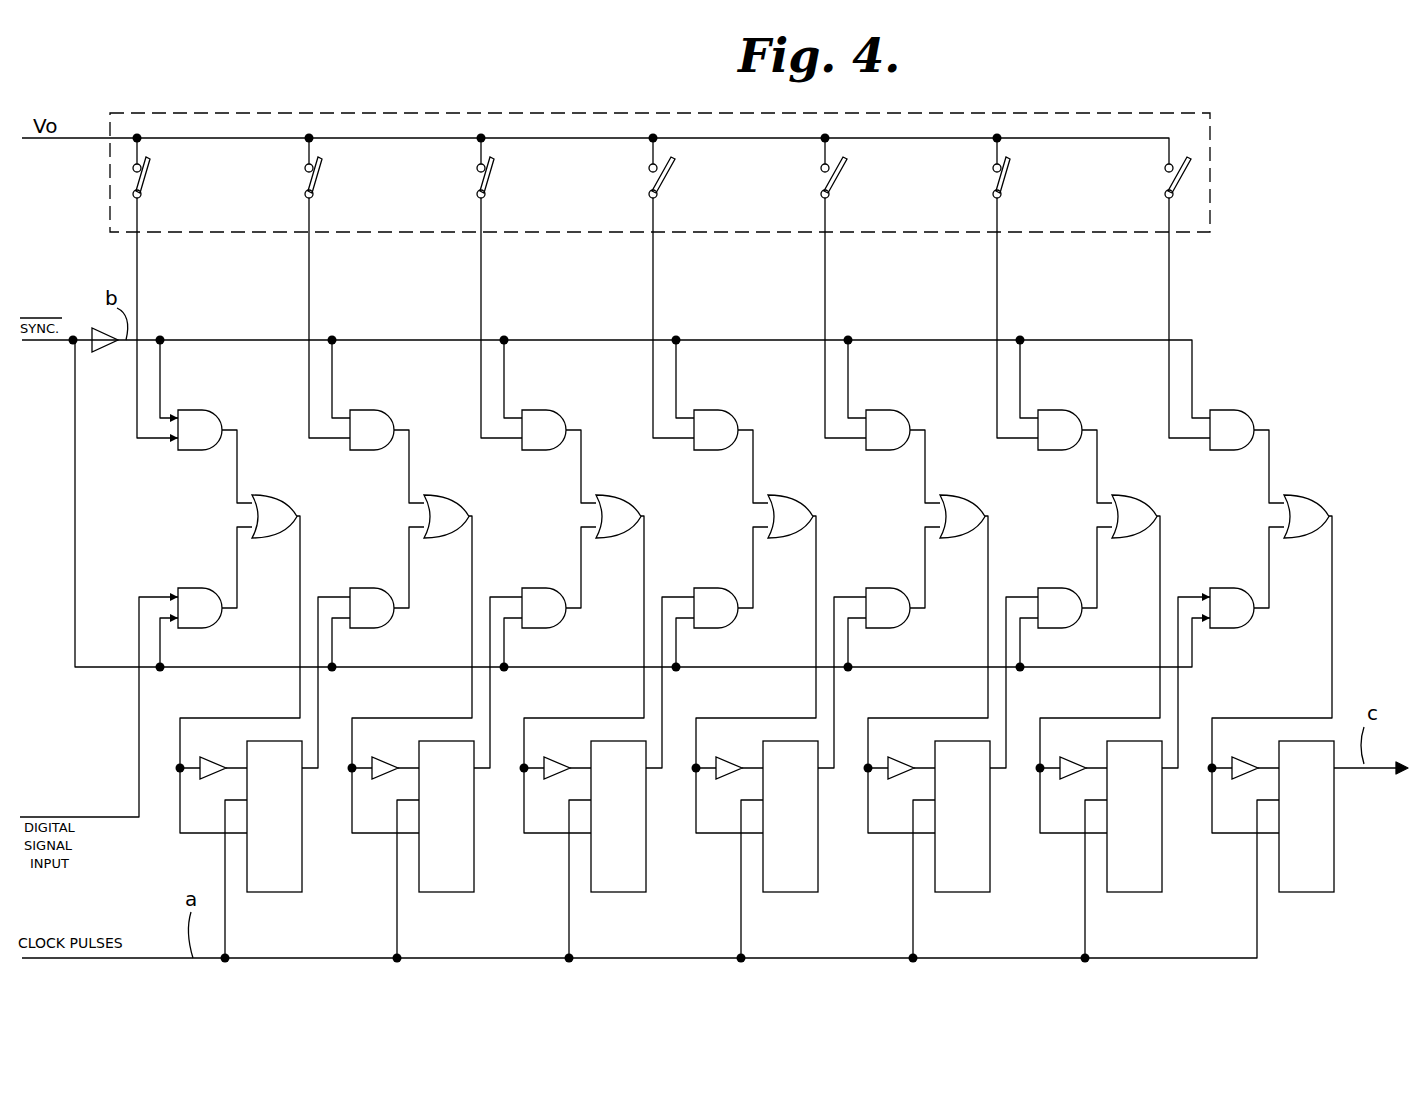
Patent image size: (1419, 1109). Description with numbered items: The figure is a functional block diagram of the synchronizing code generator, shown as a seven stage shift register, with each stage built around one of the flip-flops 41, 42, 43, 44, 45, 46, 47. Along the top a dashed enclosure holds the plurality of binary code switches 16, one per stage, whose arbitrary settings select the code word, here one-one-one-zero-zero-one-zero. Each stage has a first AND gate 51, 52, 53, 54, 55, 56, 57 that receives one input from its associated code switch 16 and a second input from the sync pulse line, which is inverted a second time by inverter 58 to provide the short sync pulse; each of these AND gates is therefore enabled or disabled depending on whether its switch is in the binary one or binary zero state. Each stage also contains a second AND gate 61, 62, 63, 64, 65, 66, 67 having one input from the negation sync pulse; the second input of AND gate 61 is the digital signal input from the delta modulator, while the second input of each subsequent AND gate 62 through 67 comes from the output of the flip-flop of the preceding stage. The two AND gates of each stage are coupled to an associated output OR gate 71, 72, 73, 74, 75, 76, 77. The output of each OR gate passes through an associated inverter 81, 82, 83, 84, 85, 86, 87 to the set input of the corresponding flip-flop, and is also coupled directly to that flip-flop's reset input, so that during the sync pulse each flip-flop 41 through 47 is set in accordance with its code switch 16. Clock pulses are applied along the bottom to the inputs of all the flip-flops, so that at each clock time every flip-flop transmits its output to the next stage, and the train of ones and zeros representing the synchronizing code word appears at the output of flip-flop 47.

The binary code switches 16 is at (1182, 112).
The flip-flop 41 is at (277, 892).
The flip-flop 42 is at (449, 892).
The flip-flop 43 is at (621, 892).
The flip-flop 44 is at (793, 892).
The flip-flop 45 is at (965, 892).
The flip-flop 46 is at (1137, 892).
The flip-flop 47 is at (1309, 892).
The AND gate 51 is at (212, 410).
The AND gate 52 is at (384, 410).
The AND gate 53 is at (556, 410).
The AND gate 54 is at (728, 410).
The AND gate 55 is at (900, 410).
The AND gate 56 is at (1072, 410).
The AND gate 57 is at (1244, 410).
The inverter 58 is at (100, 352).
The second AND gate 61 is at (215, 628).
The second AND gate 62 is at (387, 628).
The second AND gate 63 is at (559, 628).
The second AND gate 64 is at (731, 628).
The second AND gate 65 is at (903, 628).
The second AND gate 66 is at (1075, 628).
The second AND gate 67 is at (1247, 628).
The OR gate 71 is at (269, 495).
The OR gate 72 is at (441, 495).
The OR gate 73 is at (613, 495).
The OR gate 74 is at (785, 495).
The OR gate 75 is at (957, 495).
The OR gate 76 is at (1129, 495).
The OR gate 77 is at (1301, 495).
The inverter 81 is at (212, 757).
The inverter 82 is at (384, 757).
The inverter 83 is at (556, 757).
The inverter 84 is at (728, 757).
The inverter 85 is at (900, 757).
The inverter 86 is at (1072, 757).
The inverter 87 is at (1244, 757).